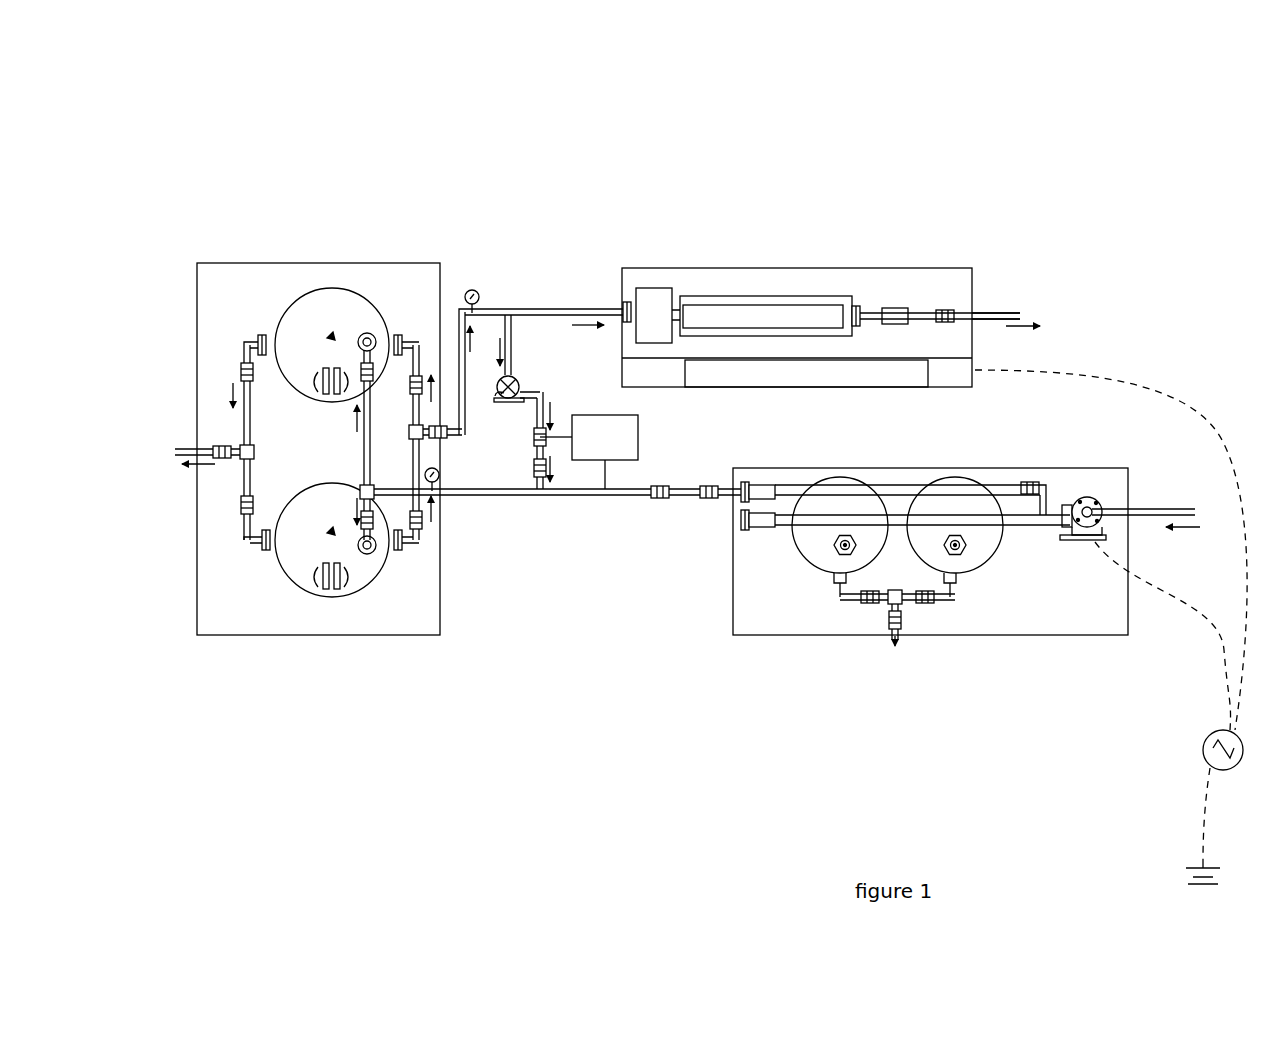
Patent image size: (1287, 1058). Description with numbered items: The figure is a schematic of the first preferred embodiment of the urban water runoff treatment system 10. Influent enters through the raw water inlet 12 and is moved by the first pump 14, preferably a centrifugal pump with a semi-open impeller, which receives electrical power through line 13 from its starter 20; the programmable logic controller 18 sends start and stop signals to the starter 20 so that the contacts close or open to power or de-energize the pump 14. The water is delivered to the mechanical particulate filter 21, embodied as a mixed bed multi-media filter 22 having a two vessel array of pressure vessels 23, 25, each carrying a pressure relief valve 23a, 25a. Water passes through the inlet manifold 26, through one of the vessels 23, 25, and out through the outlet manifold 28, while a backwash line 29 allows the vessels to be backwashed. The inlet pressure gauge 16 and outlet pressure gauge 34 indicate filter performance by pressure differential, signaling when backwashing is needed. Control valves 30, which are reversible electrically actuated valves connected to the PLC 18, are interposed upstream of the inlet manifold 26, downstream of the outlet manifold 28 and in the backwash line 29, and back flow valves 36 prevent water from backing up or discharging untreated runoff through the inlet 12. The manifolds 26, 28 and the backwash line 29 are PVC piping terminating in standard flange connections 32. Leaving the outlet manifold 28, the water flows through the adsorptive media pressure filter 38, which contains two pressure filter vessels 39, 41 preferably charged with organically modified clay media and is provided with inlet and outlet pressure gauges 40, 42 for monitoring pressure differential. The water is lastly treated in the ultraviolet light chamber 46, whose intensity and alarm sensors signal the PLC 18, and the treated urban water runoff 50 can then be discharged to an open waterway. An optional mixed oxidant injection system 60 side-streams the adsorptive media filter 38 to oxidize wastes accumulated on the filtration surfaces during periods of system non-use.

The system 10 is at (582, 120).
The raw water inlet 12 is at (1176, 506).
The line 13 is at (1196, 600).
The first pump 14 is at (514, 380).
The inlet pressure gauge 16 is at (1048, 528).
The programmable logic controller 18 is at (876, 388).
The starter 20 is at (1203, 748).
The mechanical particulate filter 21 is at (765, 660).
The multi-media filter 22 is at (733, 583).
The pressure vessel 23 is at (806, 552).
The pressure relief valve 23a is at (843, 556).
The pressure vessel 25 is at (1000, 550).
The pressure relief valve 25a is at (963, 556).
The inlet manifold 26 is at (776, 528).
The outlet manifold 28 is at (828, 484).
The backwash line 29 is at (240, 430).
The control valves 30 is at (421, 378).
The flange connections 32 is at (402, 335).
The outlet pressure gauge 34 is at (752, 485).
The back flow valves 36 is at (663, 486).
The adsorptive media pressure filter 38 is at (195, 300).
The pressure filter vessel 39 is at (332, 598).
The inlet pressure gauge 40 is at (440, 488).
The pressure filter vessel 41 is at (330, 288).
The outlet pressure gauge 42 is at (469, 290).
The ultraviolet light chamber 46 is at (790, 268).
The treated Urban Water Runoff 50 is at (1000, 316).
The mixed oxidant injection system 60 is at (603, 470).